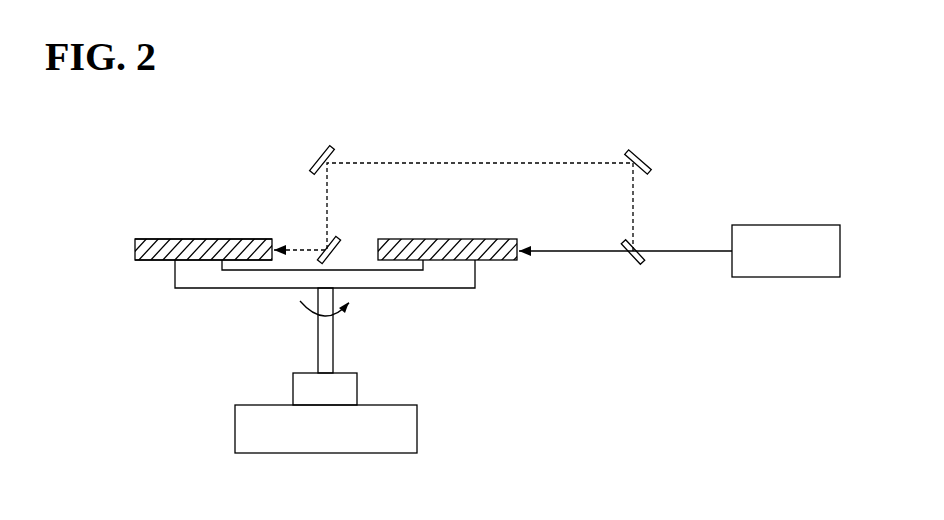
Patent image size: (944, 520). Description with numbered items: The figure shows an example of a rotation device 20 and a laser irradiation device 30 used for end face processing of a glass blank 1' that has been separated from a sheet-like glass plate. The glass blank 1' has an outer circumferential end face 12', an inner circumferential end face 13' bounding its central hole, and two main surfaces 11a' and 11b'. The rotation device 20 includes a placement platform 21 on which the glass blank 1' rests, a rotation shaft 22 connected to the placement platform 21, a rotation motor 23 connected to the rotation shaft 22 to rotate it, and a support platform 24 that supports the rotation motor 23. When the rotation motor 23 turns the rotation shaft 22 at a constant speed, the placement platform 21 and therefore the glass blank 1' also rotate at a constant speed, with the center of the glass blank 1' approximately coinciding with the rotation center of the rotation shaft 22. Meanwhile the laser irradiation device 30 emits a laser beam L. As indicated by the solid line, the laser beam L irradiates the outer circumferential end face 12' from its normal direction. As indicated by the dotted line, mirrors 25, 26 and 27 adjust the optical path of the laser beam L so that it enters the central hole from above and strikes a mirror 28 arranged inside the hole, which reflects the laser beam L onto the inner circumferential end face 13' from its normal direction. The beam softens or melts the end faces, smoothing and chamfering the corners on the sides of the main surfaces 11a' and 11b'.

The glass blank 1' is at (326, 199).
The main surface 11a' is at (197, 212).
The main surface 11b' is at (199, 297).
The outer circumferential end face 12' is at (332, 260).
The inner circumferential end face 13' is at (331, 228).
The rotation device 20 is at (158, 398).
The placement platform 21 is at (267, 290).
The rotation shaft 22 is at (317, 348).
The rotation motor 23 is at (357, 395).
The support platform 24 is at (417, 432).
The mirror 25 is at (630, 262).
The mirror 26 is at (645, 157).
The mirror 27 is at (333, 150).
The mirror 28 is at (340, 237).
The laser irradiation device 30 is at (792, 225).
The laser beam L is at (310, 247).